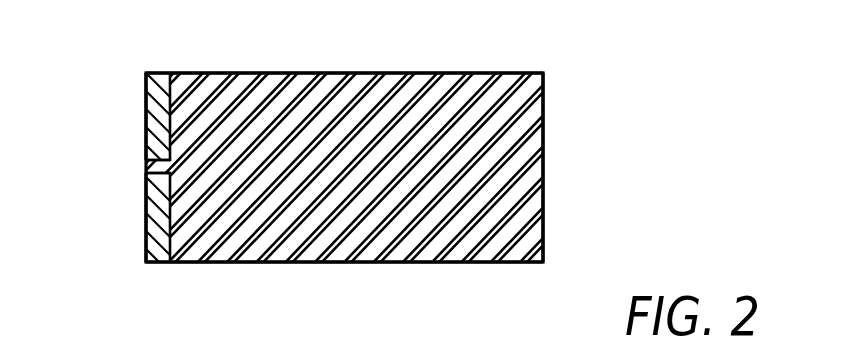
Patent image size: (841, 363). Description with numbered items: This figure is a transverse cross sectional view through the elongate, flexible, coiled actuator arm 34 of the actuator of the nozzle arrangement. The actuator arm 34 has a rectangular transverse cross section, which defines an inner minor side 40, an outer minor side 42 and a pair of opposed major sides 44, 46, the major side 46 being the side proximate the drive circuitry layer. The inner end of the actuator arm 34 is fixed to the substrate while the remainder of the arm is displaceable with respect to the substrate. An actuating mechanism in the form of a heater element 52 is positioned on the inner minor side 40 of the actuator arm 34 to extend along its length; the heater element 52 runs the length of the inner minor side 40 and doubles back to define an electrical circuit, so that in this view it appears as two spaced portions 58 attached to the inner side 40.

The actuator arm 34 is at (605, 145).
The inner minor side 40 is at (146, 253).
The outer minor side 42 is at (543, 197).
The major side 44 is at (250, 73).
The major side 46 is at (245, 262).
The heater element 52 is at (146, 158).
The spaced portions 58 is at (147, 121).